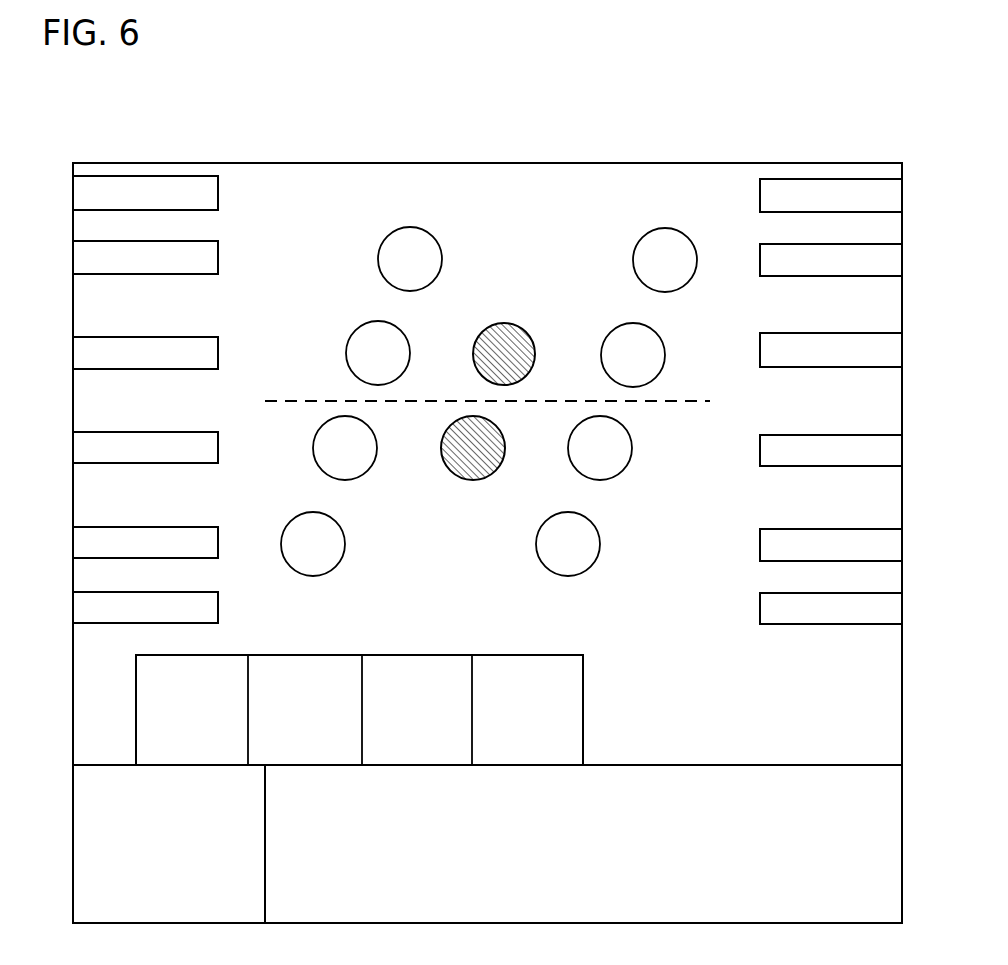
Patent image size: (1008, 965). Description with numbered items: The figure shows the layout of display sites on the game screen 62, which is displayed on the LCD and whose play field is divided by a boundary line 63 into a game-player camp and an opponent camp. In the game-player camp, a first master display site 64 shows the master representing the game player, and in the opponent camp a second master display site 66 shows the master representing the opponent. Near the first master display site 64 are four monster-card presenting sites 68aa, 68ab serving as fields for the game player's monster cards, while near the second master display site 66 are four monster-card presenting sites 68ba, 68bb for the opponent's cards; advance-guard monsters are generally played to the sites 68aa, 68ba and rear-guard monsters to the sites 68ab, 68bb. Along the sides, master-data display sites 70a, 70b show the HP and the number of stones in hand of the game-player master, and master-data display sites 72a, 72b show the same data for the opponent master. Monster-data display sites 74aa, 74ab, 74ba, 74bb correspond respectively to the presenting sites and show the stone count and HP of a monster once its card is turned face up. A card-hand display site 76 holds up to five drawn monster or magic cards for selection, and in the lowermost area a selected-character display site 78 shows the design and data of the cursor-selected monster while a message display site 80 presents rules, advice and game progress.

The game screen 62 is at (587, 163).
The boundary line 63 is at (680, 404).
The first master display site 64 is at (470, 470).
The second master display site 66 is at (500, 325).
The monster-card presenting site 68aa is at (328, 452).
The monster-card presenting site 68ab is at (330, 543).
The monster-card presenting site 68ba is at (362, 342).
The monster-card presenting site 68bb is at (424, 240).
The master-data display site 70a is at (831, 608).
The master-data display site 70b is at (145, 607).
The master-data display site 72a is at (145, 193).
The master-data display site 72b is at (831, 195).
The monster-data display site 74aa is at (487, 449).
The monster-data display site 74ab is at (487, 544).
The monster-data display site 74ba is at (487, 351).
The monster-data display site 74bb is at (487, 258).
The card-hand display site 76 is at (585, 682).
The selected-character display site 78 is at (210, 904).
The message display site 80 is at (345, 904).